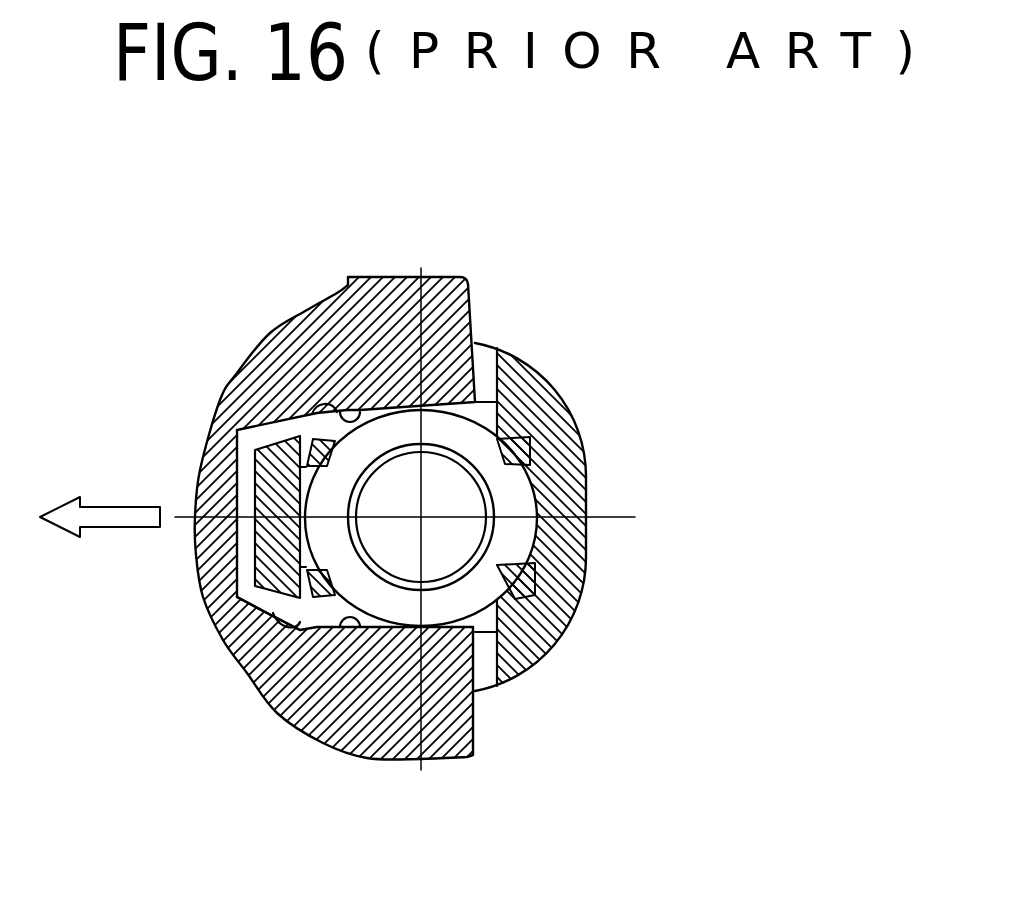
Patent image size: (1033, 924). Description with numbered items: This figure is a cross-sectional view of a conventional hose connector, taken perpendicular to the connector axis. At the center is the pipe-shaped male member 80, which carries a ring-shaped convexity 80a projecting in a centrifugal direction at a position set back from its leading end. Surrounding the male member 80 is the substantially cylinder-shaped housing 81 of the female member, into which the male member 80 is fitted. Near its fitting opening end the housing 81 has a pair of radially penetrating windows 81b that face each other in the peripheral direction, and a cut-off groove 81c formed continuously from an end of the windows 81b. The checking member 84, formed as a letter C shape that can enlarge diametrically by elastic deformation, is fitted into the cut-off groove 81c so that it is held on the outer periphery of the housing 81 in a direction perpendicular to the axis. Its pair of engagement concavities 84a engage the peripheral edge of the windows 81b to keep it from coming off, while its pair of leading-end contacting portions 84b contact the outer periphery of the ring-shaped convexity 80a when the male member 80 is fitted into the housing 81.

The male member 80 is at (482, 537).
The ring-shaped convexity 80a is at (468, 441).
The housing 81 is at (586, 470).
The windows 81b is at (484, 358).
The cut-off groove 81c is at (245, 632).
The checking member 84 is at (230, 386).
The engagement concavities 84a is at (320, 413).
The leading-end contacting portions 84b is at (351, 418).